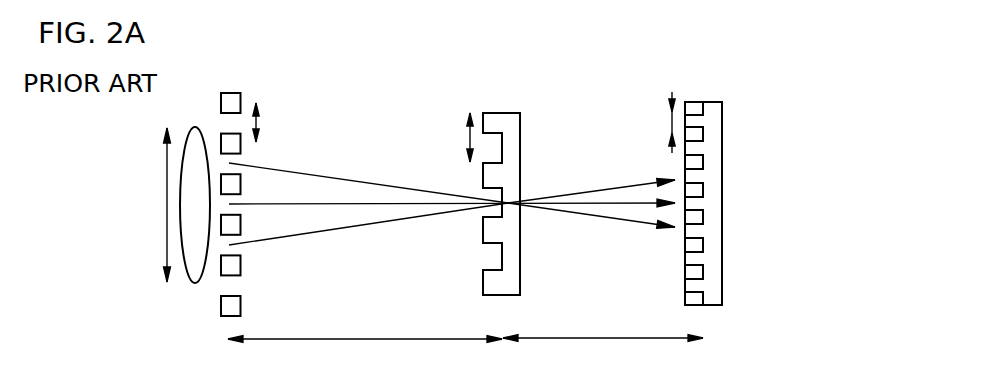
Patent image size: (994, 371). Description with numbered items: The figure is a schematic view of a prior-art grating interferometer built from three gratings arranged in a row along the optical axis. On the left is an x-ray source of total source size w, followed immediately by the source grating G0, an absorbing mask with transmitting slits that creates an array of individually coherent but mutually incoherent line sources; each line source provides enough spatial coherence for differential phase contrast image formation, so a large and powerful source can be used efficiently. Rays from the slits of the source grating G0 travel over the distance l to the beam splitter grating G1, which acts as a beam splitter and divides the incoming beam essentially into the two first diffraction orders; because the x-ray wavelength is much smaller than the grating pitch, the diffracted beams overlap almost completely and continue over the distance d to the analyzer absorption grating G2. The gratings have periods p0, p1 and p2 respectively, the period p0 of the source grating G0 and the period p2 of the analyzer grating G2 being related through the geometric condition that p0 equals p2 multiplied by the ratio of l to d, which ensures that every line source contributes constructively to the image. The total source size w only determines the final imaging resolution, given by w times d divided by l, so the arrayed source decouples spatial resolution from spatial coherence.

The source grating G0 is at (231, 188).
The beam splitter grating G1 is at (501, 176).
The analyzer absorption grating G2 is at (703, 181).
The period of source grating p0 is at (271, 124).
The period of beam splitter grating p1 is at (455, 137).
The period of analyzer grating p2 is at (658, 122).
The total source size w is at (159, 205).
The distance between G0 and G1 l is at (365, 324).
The distance between G1 and G2 d is at (603, 324).